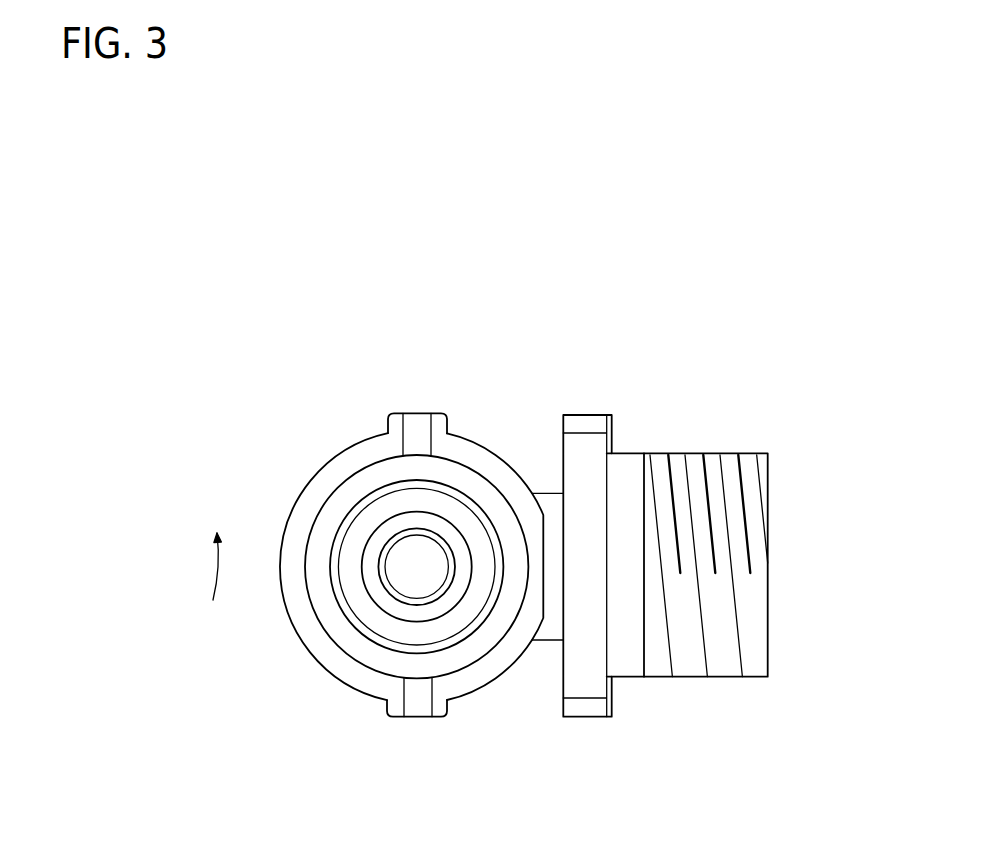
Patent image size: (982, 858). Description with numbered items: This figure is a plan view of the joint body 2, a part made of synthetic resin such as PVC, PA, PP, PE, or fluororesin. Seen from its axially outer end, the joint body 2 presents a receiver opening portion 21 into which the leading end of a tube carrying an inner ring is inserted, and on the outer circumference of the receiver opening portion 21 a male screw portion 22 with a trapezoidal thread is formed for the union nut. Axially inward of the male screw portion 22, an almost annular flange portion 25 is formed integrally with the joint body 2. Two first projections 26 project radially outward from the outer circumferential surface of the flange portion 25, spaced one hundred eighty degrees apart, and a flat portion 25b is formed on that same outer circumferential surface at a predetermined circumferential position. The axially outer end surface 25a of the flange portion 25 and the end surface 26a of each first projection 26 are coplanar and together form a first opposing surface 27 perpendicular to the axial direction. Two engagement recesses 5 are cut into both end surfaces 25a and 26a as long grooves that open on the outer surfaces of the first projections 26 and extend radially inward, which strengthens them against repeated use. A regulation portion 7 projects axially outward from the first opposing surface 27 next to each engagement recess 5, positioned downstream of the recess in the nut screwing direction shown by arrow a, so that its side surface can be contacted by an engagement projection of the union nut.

The joint body 2 is at (522, 432).
The engagement recess 5 is at (418, 420).
The regulation portion 7 is at (443, 427).
The receiver opening portion 21 is at (323, 530).
The male screw portion 22 is at (307, 595).
The flange portion 25 is at (315, 660).
The end surface of the flange portion 25a is at (322, 488).
The flat portion 25b is at (545, 548).
The first projection 26 is at (391, 411).
The end surface of the first projection 26a is at (387, 421).
The first opposing surface 27 is at (220, 383).
The arrow a is at (212, 567).